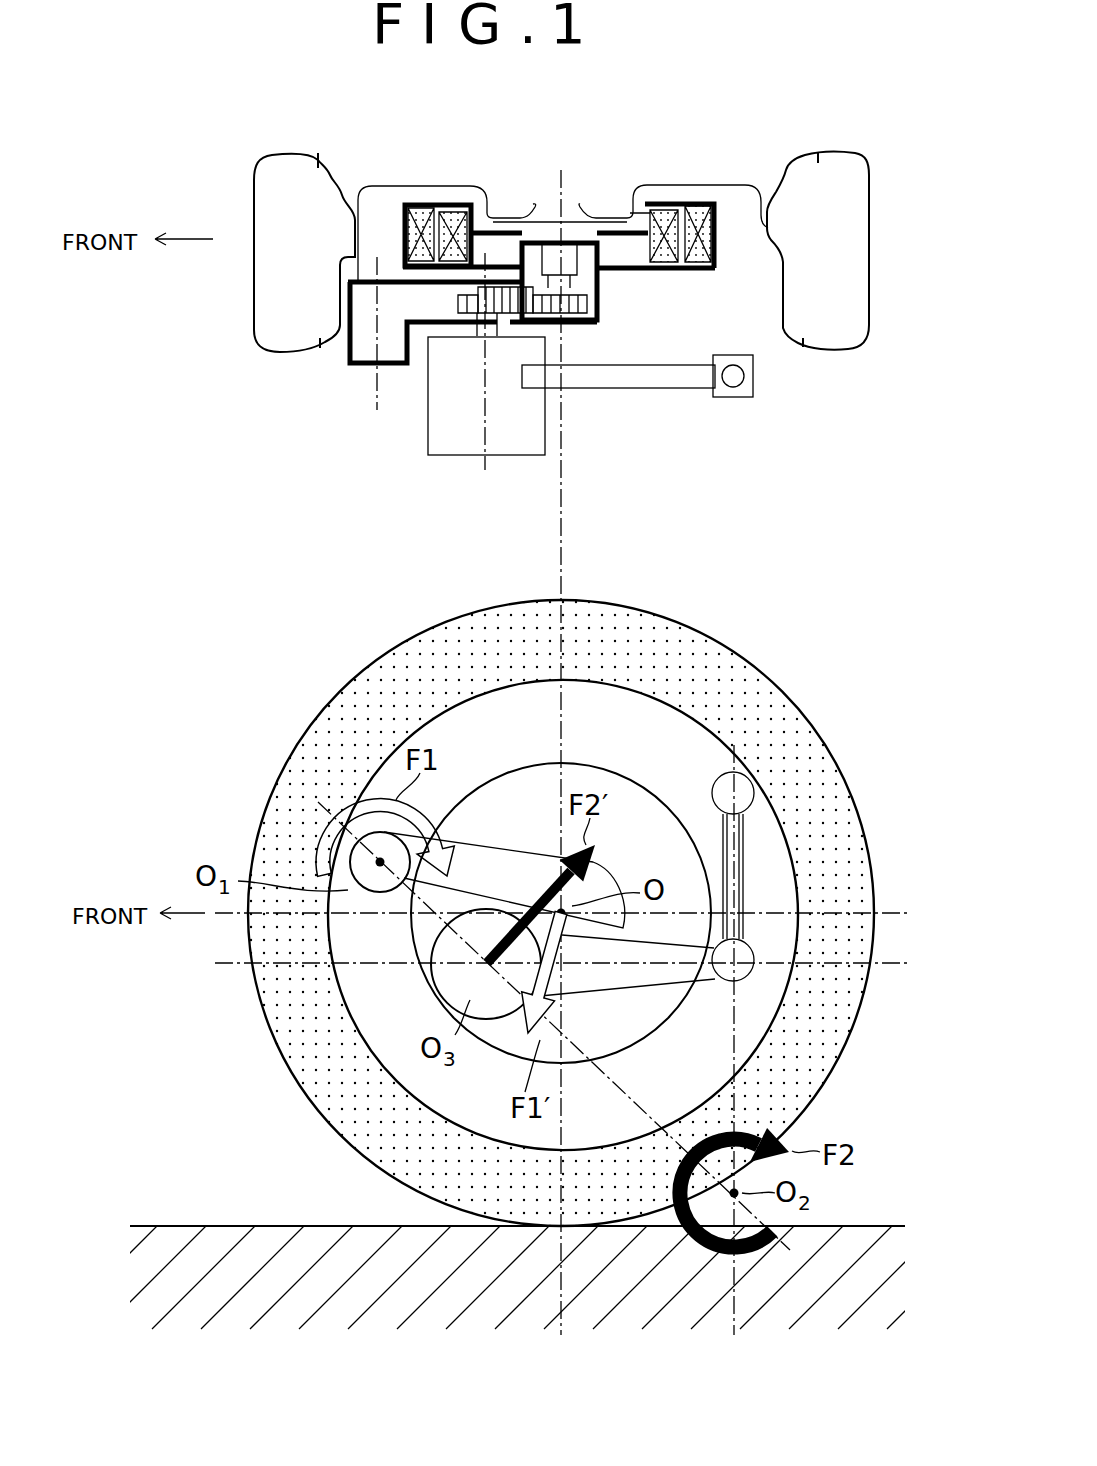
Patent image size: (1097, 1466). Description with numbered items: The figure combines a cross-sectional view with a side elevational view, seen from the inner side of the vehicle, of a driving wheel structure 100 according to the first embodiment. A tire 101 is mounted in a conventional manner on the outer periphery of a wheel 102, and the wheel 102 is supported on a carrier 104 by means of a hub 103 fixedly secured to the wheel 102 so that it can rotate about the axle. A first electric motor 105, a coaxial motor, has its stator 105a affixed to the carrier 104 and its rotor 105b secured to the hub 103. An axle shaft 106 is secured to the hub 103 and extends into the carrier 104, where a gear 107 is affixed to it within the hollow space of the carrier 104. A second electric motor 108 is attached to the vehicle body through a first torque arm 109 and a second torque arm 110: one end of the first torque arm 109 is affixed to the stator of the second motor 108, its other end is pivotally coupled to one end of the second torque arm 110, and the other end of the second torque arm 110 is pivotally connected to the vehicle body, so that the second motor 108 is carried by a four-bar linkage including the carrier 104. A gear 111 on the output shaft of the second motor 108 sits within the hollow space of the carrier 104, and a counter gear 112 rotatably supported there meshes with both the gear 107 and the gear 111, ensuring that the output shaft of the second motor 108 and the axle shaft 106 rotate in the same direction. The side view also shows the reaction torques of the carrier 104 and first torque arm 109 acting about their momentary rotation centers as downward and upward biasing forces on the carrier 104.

The driving wheel structure 100 is at (233, 126).
The tire 101 is at (847, 152).
The wheel 102 is at (416, 184).
The hub 103 is at (574, 225).
The carrier 104 is at (597, 282).
The first electric motor 105 is at (638, 259).
The stator 105a is at (425, 205).
The rotor 105b is at (455, 212).
The axle shaft 106 is at (563, 318).
The gear 107 is at (600, 303).
The second electric motor 108 is at (548, 440).
The first torque arm 109 is at (657, 363).
The second torque arm 110 is at (754, 373).
The gear 111 is at (458, 303).
The counter gear 112 is at (512, 312).